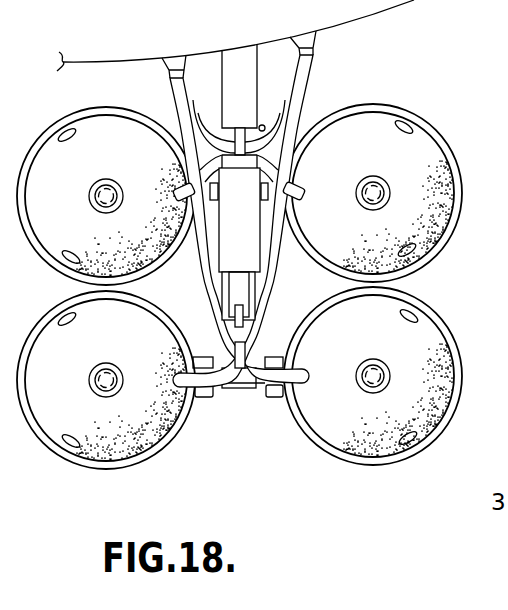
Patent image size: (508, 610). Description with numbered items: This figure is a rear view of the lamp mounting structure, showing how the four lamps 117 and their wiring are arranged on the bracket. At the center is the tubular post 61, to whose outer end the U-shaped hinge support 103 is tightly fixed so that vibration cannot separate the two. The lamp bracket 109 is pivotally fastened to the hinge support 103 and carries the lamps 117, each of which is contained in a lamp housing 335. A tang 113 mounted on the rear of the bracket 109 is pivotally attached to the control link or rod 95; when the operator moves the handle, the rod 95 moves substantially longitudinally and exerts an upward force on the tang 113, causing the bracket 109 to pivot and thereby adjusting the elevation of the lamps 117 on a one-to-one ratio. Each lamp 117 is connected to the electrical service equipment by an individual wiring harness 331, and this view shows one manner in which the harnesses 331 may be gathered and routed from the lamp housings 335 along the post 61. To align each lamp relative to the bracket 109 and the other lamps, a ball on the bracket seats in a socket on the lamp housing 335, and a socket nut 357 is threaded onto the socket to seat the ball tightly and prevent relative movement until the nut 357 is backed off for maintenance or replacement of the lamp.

The tubular post 61 is at (240, 58).
The wiring harness 331 is at (316, 71).
The hinge support 103 is at (247, 223).
The control link or rod 95 is at (242, 285).
The tang 113 is at (240, 312).
The lamp bracket 109 is at (238, 380).
The socket nut 357 is at (272, 392).
The lamp housing 335 is at (427, 328).
The lamp 117 is at (96, 475).